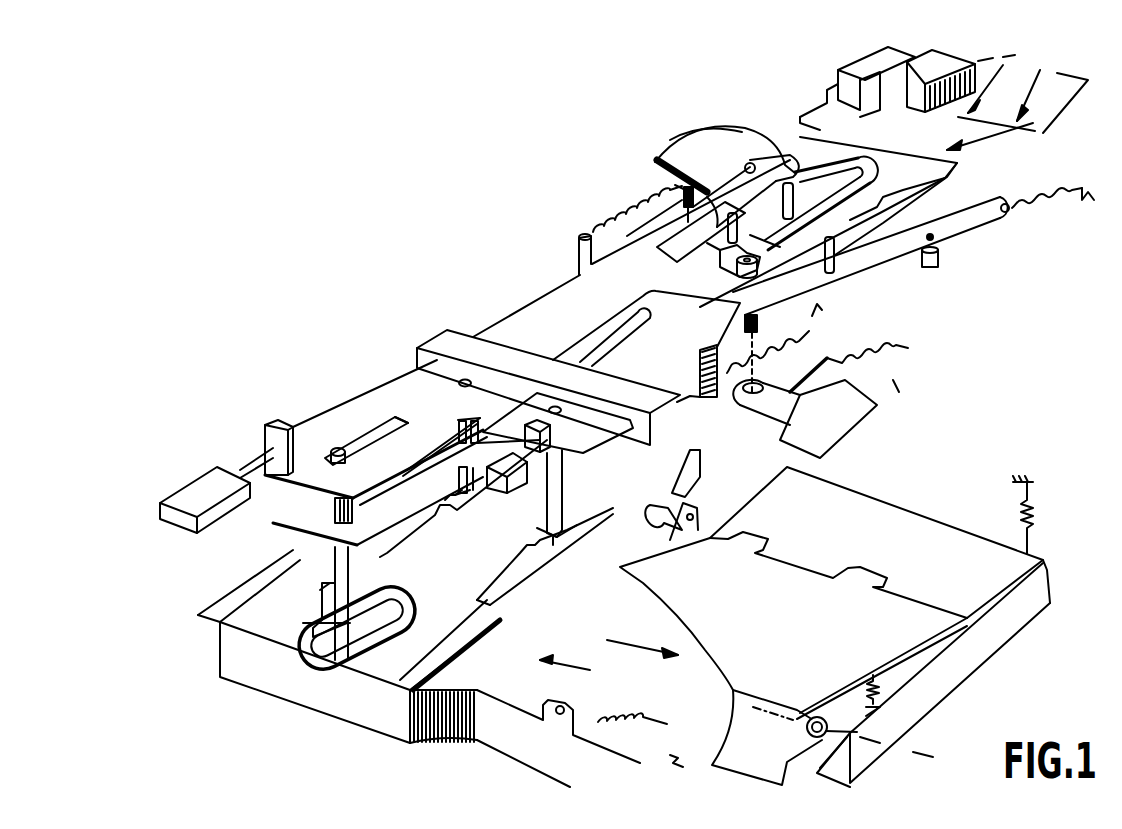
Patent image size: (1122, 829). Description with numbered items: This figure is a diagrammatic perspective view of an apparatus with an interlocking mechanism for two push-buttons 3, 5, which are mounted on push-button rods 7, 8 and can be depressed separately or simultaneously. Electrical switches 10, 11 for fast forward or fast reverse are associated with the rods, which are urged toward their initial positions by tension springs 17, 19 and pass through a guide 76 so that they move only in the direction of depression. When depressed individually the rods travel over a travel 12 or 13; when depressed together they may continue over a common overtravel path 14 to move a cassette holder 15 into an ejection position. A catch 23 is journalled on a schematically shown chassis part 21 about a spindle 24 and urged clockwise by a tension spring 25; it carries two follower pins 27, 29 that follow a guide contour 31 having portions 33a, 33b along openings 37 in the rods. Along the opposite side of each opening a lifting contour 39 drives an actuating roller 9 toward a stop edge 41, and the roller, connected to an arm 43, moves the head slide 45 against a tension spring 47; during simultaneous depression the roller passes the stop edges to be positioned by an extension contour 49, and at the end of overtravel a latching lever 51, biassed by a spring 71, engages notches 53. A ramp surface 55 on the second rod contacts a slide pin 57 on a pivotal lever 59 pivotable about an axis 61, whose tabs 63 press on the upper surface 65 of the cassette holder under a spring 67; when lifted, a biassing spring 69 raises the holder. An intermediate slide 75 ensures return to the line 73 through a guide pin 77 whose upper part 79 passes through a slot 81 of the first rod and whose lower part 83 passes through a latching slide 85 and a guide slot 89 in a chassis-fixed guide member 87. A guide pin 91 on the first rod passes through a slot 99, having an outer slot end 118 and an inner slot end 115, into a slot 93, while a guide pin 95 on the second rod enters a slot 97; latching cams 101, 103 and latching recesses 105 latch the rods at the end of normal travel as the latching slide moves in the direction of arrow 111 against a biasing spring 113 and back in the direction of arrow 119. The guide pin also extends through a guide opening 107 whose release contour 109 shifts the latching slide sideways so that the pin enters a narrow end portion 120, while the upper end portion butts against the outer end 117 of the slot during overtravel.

The push-button 3 is at (838, 68).
The push-button 5 is at (920, 97).
The push-button rod 7 is at (715, 237).
The push-button rod 8 is at (670, 363).
The actuating roller 9 is at (745, 276).
The electrical switch 10 is at (194, 489).
The electrical switch 11 is at (513, 485).
The travel 12 is at (999, 93).
The travel 13 is at (1065, 103).
The overtravel path 14 is at (975, 138).
The cassette holder 15 is at (926, 523).
The tension spring 17 is at (602, 227).
The tension spring 19 is at (775, 339).
The chassis part 21 is at (752, 140).
The catch 23 is at (736, 181).
The spindle 24 is at (750, 163).
The tension spring 25 is at (647, 203).
The follower pin 27 is at (703, 190).
The follower pin 29 is at (796, 190).
The guide contour 31 is at (693, 258).
The portion of guide contour 33a is at (778, 244).
The portion of guide contour 33b is at (821, 173).
The opening 37 is at (850, 173).
The lifting contour 39 is at (818, 284).
The stop edge 41 is at (720, 266).
The arm 43 is at (767, 405).
The head slide 45 is at (855, 414).
The tension spring 47 is at (876, 372).
The extension contour 49 is at (877, 195).
The latching lever 51 is at (865, 270).
The notch 53 is at (902, 188).
The ramp surface 55 is at (689, 466).
The slide pin 57 is at (661, 525).
The pivotal lever 59 is at (647, 577).
The axis 61 is at (875, 740).
The tab 63 is at (768, 544).
The upper surface 65 is at (990, 587).
The spring 67 is at (879, 684).
The biassing spring 69 is at (1035, 508).
The spring 71 is at (1047, 219).
The line 73 is at (985, 85).
The intermediate slide 75 is at (307, 513).
The guide 76 is at (464, 346).
The guide pin 77 is at (350, 570).
The upper part of guide pin 79 is at (338, 448).
The slot 81 is at (372, 424).
The lower part of guide pin 83 is at (373, 643).
The latching slide 85 is at (225, 654).
The guide member 87 is at (355, 670).
The guide slot 89 is at (320, 661).
The guide pin 91 is at (470, 498).
The slot 93 is at (442, 535).
The guide pin 95 is at (560, 481).
The slot 97 is at (510, 573).
The slot 99 is at (436, 443).
The latching cam 101 is at (460, 499).
The latching cam 103 is at (553, 545).
The latching recess 105 is at (438, 520).
The guide opening 107 is at (325, 580).
The release contour 109 is at (320, 598).
The arrow 111 is at (586, 666).
The biasing spring 113 is at (628, 730).
The inner slot end 115 is at (410, 478).
The outer end of slot 117 is at (405, 424).
The outer slot end 118 is at (477, 424).
The arrow 119 is at (632, 641).
The narrow end portion 120 is at (302, 618).